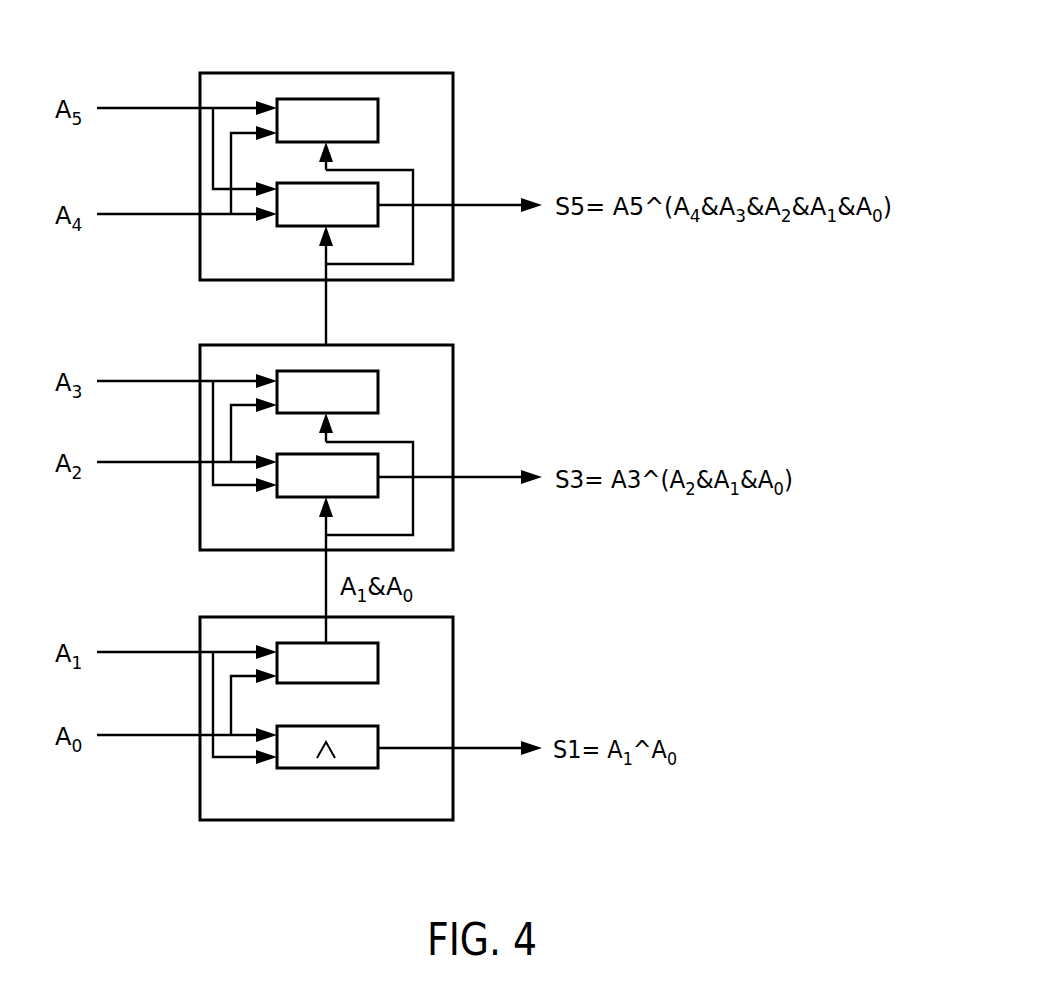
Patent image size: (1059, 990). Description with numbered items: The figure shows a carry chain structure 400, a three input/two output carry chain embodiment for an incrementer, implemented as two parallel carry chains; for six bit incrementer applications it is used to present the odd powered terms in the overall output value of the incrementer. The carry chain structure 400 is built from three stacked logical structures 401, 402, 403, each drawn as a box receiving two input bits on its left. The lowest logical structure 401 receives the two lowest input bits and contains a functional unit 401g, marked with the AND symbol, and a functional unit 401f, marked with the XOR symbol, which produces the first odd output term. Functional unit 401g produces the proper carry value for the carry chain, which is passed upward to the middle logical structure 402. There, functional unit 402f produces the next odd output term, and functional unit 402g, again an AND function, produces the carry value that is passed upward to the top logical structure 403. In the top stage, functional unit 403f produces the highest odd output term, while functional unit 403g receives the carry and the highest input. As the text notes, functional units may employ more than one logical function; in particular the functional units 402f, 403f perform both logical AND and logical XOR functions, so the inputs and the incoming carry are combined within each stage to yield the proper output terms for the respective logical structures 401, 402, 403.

The carry chain structure 400 is at (752, 41).
The logical structure 401 is at (437, 686).
The functional unit 401f is at (350, 760).
The functional unit 401g is at (367, 668).
The logical structure 402 is at (455, 418).
The functional unit 402f is at (290, 488).
The functional unit 402g is at (367, 397).
The logical structure 403 is at (455, 147).
The functional unit 403f is at (290, 217).
The functional unit 403g is at (367, 125).